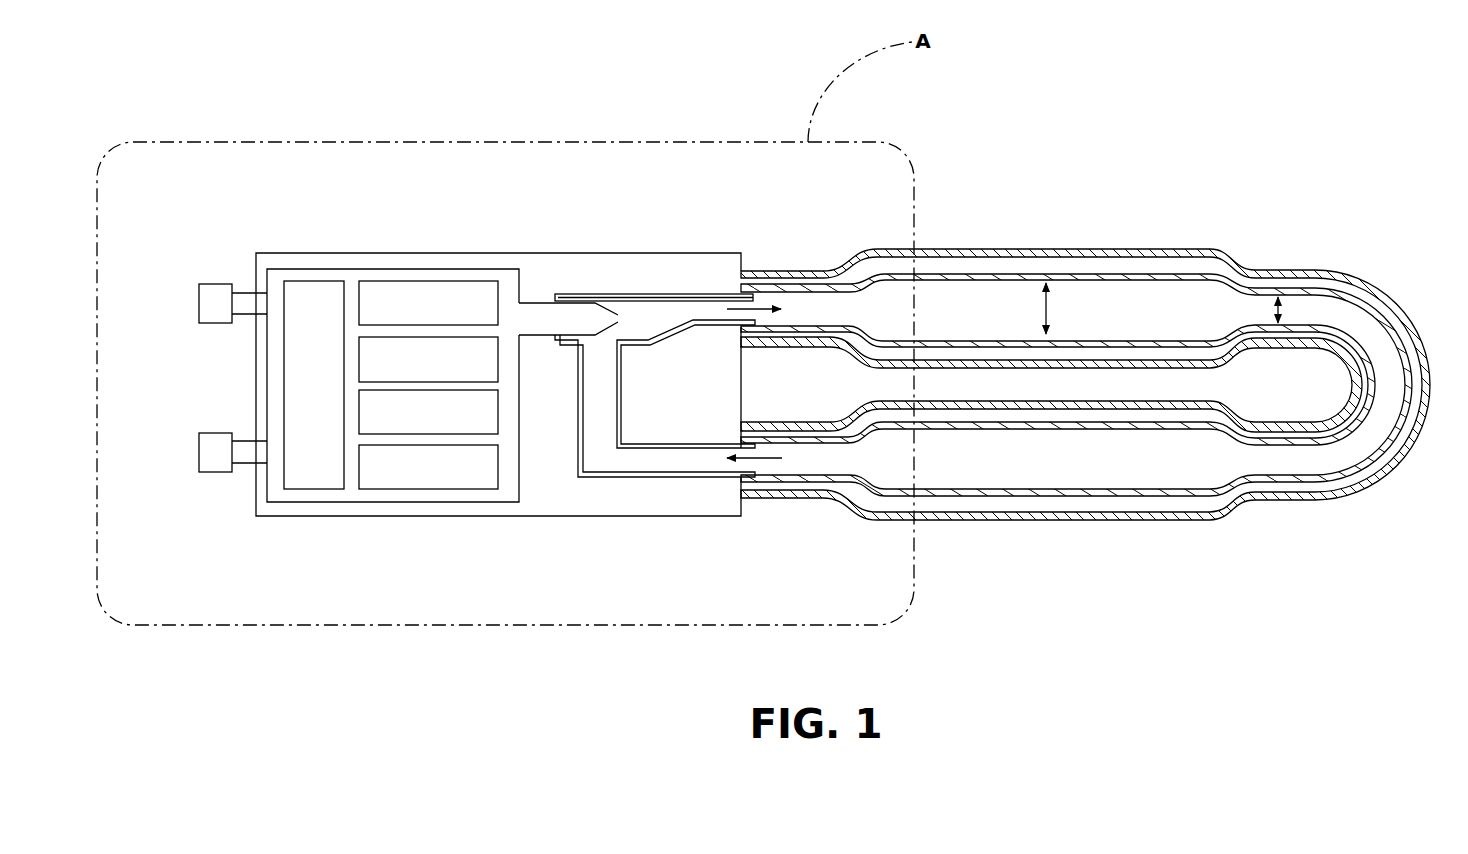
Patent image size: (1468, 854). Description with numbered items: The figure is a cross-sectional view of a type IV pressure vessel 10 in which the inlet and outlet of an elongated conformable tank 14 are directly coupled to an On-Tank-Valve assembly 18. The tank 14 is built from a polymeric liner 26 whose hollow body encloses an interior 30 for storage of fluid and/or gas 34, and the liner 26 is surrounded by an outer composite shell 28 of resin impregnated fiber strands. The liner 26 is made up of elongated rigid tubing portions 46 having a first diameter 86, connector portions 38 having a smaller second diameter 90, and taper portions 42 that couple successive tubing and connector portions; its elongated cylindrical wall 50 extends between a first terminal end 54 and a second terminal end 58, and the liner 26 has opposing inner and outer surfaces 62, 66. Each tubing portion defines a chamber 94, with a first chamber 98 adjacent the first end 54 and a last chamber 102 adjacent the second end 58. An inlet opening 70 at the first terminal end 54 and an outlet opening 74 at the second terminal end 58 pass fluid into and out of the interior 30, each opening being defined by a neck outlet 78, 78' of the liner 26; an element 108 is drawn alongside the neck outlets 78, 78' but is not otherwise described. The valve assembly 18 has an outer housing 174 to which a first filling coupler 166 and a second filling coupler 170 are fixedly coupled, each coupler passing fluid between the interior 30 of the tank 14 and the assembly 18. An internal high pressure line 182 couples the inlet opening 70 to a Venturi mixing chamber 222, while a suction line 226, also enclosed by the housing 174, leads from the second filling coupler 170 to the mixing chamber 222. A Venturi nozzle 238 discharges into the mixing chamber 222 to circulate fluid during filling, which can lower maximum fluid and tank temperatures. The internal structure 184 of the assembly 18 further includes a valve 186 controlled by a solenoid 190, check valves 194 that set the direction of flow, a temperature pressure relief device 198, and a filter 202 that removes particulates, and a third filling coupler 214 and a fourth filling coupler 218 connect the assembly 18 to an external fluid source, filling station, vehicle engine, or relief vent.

The pressure vessel 10 is at (783, 326).
The elongated conformable tank 14 is at (1052, 370).
The On-Tank-Valve assembly 18 is at (463, 356).
The polymeric liner 26 is at (1052, 370).
The outer composite shell 28 is at (1085, 359).
The interior 30 is at (1051, 364).
The fluid and/or gas 34 is at (1051, 334).
The connector portions 38 is at (1090, 359).
The taper portions 42 is at (852, 386).
The elongated rigid tubing portions 46 is at (1085, 379).
The elongated cylindrical wall 50 is at (1076, 428).
The first terminal end 54 is at (1051, 323).
The second terminal end 58 is at (704, 561).
The inner surface 62 is at (1076, 392).
The outer surface 66 is at (1076, 423).
The inlet opening 70 is at (767, 271).
The outlet opening 74 is at (763, 419).
The neck outlet 78 is at (833, 227).
The neck outlet 78' is at (753, 530).
The first diameter 86 is at (1062, 270).
The second diameter 90 is at (1309, 275).
The chamber 94 is at (1085, 379).
The first chamber 98 is at (1085, 379).
The last chamber 102 is at (1085, 418).
The insulating layer 108 is at (821, 375).
The first filling coupler 166 is at (686, 384).
The second filling coupler 170 is at (638, 450).
The outer housing 174 is at (498, 337).
The internal high pressure line 182 is at (654, 248).
The internal structure 184 is at (389, 343).
The valve 186 is at (314, 385).
The solenoid 190 is at (428, 303).
The check valves 194 is at (428, 412).
The temperature pressure relief device 198 is at (428, 467).
The filter 202 is at (428, 359).
The third filling coupler 214 is at (197, 274).
The fourth filling coupler 218 is at (197, 481).
The Venturi mixing chamber 222 is at (654, 248).
The suction line 226 is at (638, 407).
The Venturi nozzle 238 is at (568, 268).